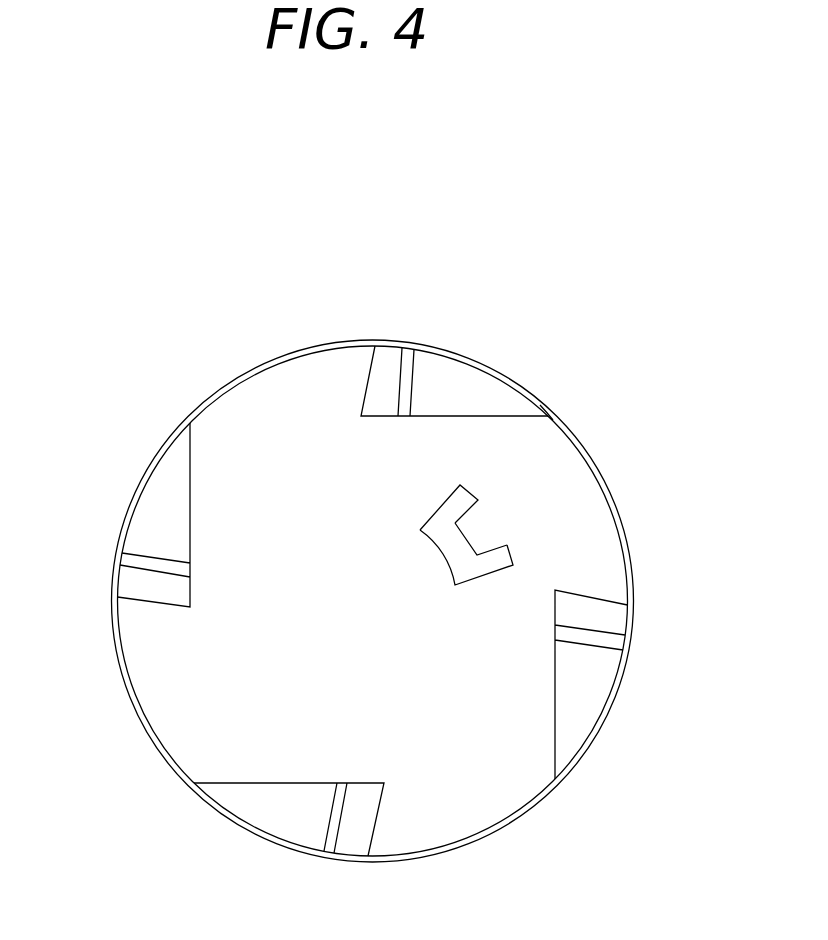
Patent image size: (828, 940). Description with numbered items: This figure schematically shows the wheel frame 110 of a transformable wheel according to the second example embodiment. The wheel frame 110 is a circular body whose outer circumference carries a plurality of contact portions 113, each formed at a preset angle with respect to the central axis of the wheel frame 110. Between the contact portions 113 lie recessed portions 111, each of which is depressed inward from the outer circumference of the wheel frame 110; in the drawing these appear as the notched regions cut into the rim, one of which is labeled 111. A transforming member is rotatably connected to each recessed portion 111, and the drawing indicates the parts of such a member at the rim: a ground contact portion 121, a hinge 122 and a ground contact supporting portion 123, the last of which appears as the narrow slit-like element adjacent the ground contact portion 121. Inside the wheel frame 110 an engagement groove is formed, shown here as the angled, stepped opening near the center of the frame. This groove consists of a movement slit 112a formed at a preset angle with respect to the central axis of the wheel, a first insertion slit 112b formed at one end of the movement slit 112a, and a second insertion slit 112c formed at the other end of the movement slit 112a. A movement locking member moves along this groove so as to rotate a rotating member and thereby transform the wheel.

The wheel frame 110 is at (295, 395).
The recessed portion 111 is at (163, 510).
The contact portion 113 is at (328, 347).
The ground contact portion 121 is at (465, 357).
The hinge 122 is at (547, 410).
The ground contact supporting portion 123 is at (413, 365).
The movement slit 112a is at (457, 550).
The first insertion slit 112b is at (465, 500).
The second insertion slit 112c is at (498, 565).